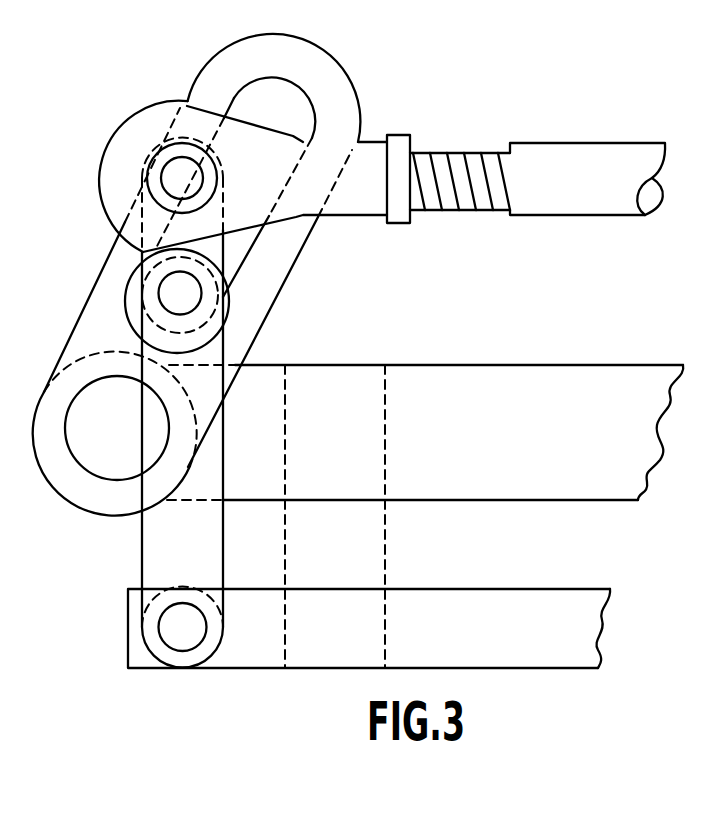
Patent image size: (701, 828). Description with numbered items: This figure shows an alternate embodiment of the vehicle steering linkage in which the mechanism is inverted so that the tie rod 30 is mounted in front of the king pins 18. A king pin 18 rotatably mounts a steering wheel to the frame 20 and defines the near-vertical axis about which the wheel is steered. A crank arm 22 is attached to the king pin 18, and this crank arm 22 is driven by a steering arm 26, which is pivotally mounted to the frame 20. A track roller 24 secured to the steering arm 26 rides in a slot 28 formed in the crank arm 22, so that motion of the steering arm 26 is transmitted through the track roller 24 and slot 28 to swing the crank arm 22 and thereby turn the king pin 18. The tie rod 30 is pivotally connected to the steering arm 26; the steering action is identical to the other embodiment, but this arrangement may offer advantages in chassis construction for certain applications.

The king pin 18 is at (129, 443).
The frame 20 is at (558, 502).
The crank arm 22 is at (338, 68).
The track roller 24 is at (140, 278).
The steering arm 26 is at (143, 557).
The slot 28 is at (275, 90).
The tie rod 30 is at (577, 214).